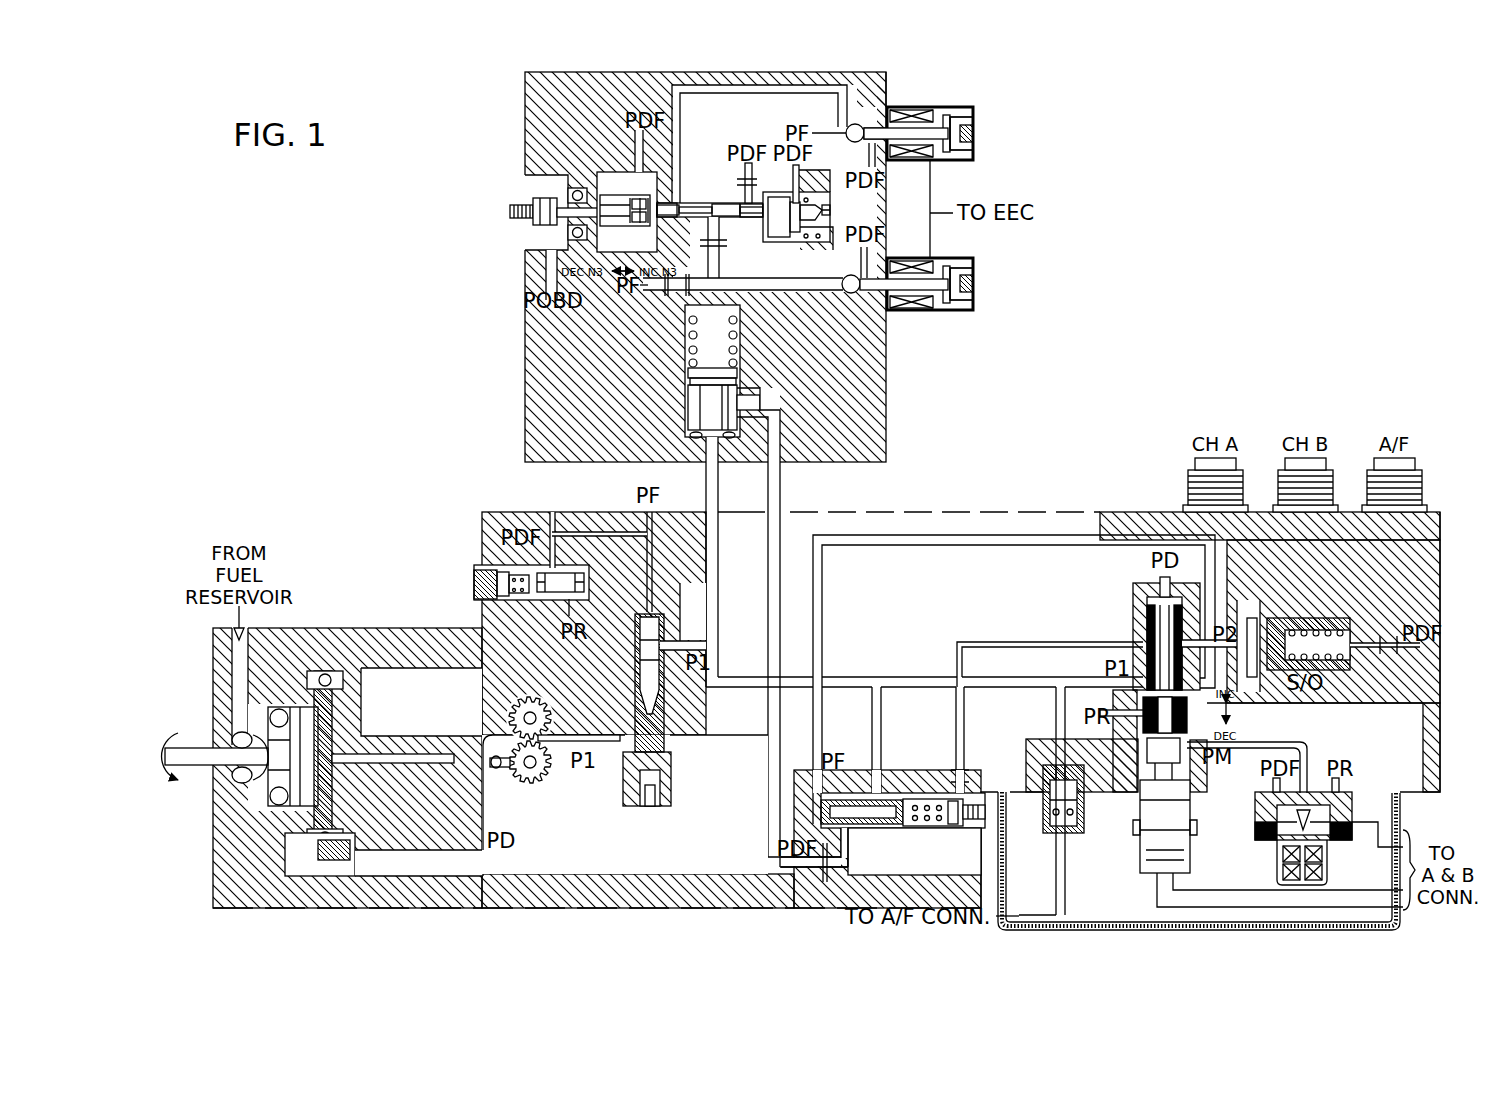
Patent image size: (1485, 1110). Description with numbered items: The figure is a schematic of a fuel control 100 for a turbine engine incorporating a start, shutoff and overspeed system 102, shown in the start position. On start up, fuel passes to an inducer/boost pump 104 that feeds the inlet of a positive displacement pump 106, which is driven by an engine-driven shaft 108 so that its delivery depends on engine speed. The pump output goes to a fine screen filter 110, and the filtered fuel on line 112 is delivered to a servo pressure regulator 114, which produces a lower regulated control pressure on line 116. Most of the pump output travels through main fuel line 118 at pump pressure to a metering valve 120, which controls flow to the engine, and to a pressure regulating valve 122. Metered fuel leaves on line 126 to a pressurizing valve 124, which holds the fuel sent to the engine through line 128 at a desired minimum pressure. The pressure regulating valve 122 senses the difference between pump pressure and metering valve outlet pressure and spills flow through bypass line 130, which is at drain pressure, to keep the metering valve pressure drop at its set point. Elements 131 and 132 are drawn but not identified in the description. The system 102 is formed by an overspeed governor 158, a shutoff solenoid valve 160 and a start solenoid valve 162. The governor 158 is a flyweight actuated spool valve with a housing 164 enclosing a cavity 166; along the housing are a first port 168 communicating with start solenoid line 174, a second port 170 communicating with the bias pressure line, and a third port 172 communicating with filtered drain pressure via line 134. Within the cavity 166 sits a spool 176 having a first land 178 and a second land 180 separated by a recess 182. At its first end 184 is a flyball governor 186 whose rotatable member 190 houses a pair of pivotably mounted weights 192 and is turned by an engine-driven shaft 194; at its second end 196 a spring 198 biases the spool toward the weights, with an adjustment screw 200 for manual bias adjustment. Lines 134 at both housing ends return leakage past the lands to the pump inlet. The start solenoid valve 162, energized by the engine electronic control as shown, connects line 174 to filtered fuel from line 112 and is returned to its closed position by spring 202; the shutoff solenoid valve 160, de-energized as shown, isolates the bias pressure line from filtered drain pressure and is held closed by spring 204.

The fuel control 100 is at (462, 558).
The start, shutoff and overspeed system 102 is at (450, 190).
The inducer/boost pump 104 is at (286, 707).
The positive displacement pump 106 is at (505, 698).
The shaft 108 is at (208, 778).
The fine screen filter 110 is at (672, 700).
The line 112 is at (830, 127).
The servo pressure regulator 114 is at (548, 530).
The line 116 is at (578, 608).
The main fuel line 118 is at (718, 652).
The metering valve 120 is at (1140, 625).
The pressure regulating valve 122 is at (884, 800).
The pressurizing valve 124 is at (1303, 618).
The line 126 is at (1240, 625).
The line 128 is at (1343, 703).
The bypass line 130 is at (773, 764).
The minimum pressure valve 131 is at (1140, 752).
The passage 132 is at (849, 868).
The line 134 is at (633, 150).
The overspeed governor 158 is at (555, 162).
The shutoff solenoid valve 160 is at (978, 292).
The start solenoid valve 162 is at (978, 128).
The housing 164 is at (765, 222).
The cavity 166 is at (682, 207).
The first port 168 is at (663, 266).
The second port 170 is at (714, 250).
The third port 172 is at (748, 205).
The start solenoid line 174 is at (673, 118).
The spool 176 is at (695, 205).
The first land 178 is at (683, 203).
The second land 180 is at (748, 222).
The recess 182 is at (663, 217).
The first end 184 is at (627, 233).
The flyball governor 186 is at (621, 197).
The rotatable member 190 is at (576, 229).
The pivotably mounted weights 192 is at (632, 190).
The shaft 194 is at (514, 218).
The second end 196 is at (785, 243).
The spring 198 is at (812, 243).
The adjustment screw 200 is at (852, 210).
The spring 202 is at (955, 158).
The spring 204 is at (950, 312).